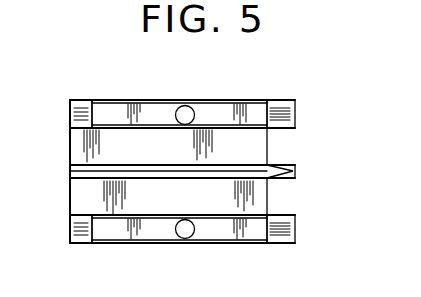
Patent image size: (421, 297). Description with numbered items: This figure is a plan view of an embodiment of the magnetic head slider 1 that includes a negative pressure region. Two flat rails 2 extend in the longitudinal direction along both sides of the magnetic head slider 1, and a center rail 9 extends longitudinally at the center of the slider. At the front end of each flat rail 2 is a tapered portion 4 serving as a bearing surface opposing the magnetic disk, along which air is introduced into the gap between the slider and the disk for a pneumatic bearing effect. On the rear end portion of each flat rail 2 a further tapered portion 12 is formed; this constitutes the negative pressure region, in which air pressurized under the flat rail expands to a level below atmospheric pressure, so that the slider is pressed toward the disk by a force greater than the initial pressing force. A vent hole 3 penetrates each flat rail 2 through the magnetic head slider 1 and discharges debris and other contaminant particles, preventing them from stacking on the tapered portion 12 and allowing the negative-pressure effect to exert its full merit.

The magnetic head slider 1 is at (191, 173).
The flat rail 2 is at (145, 107).
The vent hole 3 is at (183, 107).
The tapered portion 4 is at (80, 103).
The center rail 9 is at (275, 163).
The tapered portion 12 is at (290, 103).